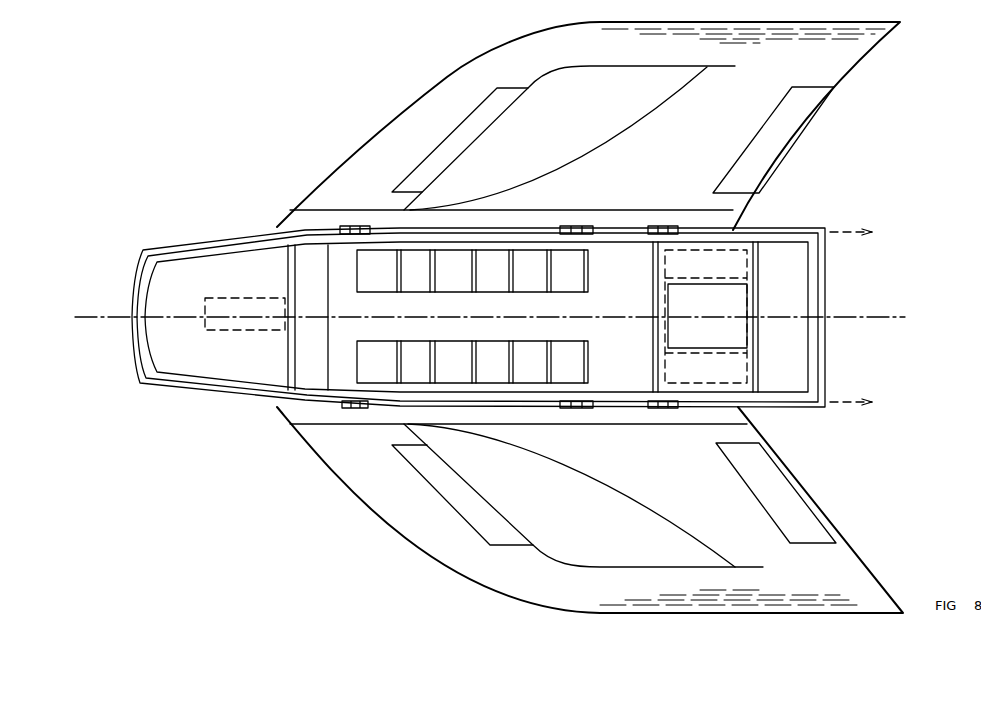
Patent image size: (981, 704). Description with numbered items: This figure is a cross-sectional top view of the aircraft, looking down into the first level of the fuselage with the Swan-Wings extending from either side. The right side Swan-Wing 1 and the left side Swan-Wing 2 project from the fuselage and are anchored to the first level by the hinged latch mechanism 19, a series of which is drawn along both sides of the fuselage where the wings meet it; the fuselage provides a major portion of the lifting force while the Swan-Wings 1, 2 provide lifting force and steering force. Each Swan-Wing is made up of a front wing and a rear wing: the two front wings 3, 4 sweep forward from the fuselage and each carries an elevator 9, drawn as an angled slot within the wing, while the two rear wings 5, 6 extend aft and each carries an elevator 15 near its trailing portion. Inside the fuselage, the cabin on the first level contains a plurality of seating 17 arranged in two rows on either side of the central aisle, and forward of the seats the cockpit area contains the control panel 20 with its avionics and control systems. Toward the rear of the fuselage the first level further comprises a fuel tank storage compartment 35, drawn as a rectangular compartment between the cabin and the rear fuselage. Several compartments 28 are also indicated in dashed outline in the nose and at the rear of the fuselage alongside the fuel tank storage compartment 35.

The right side Swan-Wing 1 is at (727, 43).
The left side Swan-Wing 2 is at (693, 592).
The front wing 3 is at (440, 170).
The front wing 4 is at (382, 470).
The rear wing 5 is at (727, 133).
The rear wing 6 is at (713, 487).
The elevator 9 is at (407, 160).
The elevator 15 is at (798, 112).
The seating 17 is at (413, 262).
The hinged latch mechanism 19 is at (353, 227).
The control panel 20 is at (310, 337).
The storage compartment 28 is at (240, 318).
The fuel tank storage compartment 35 is at (730, 307).